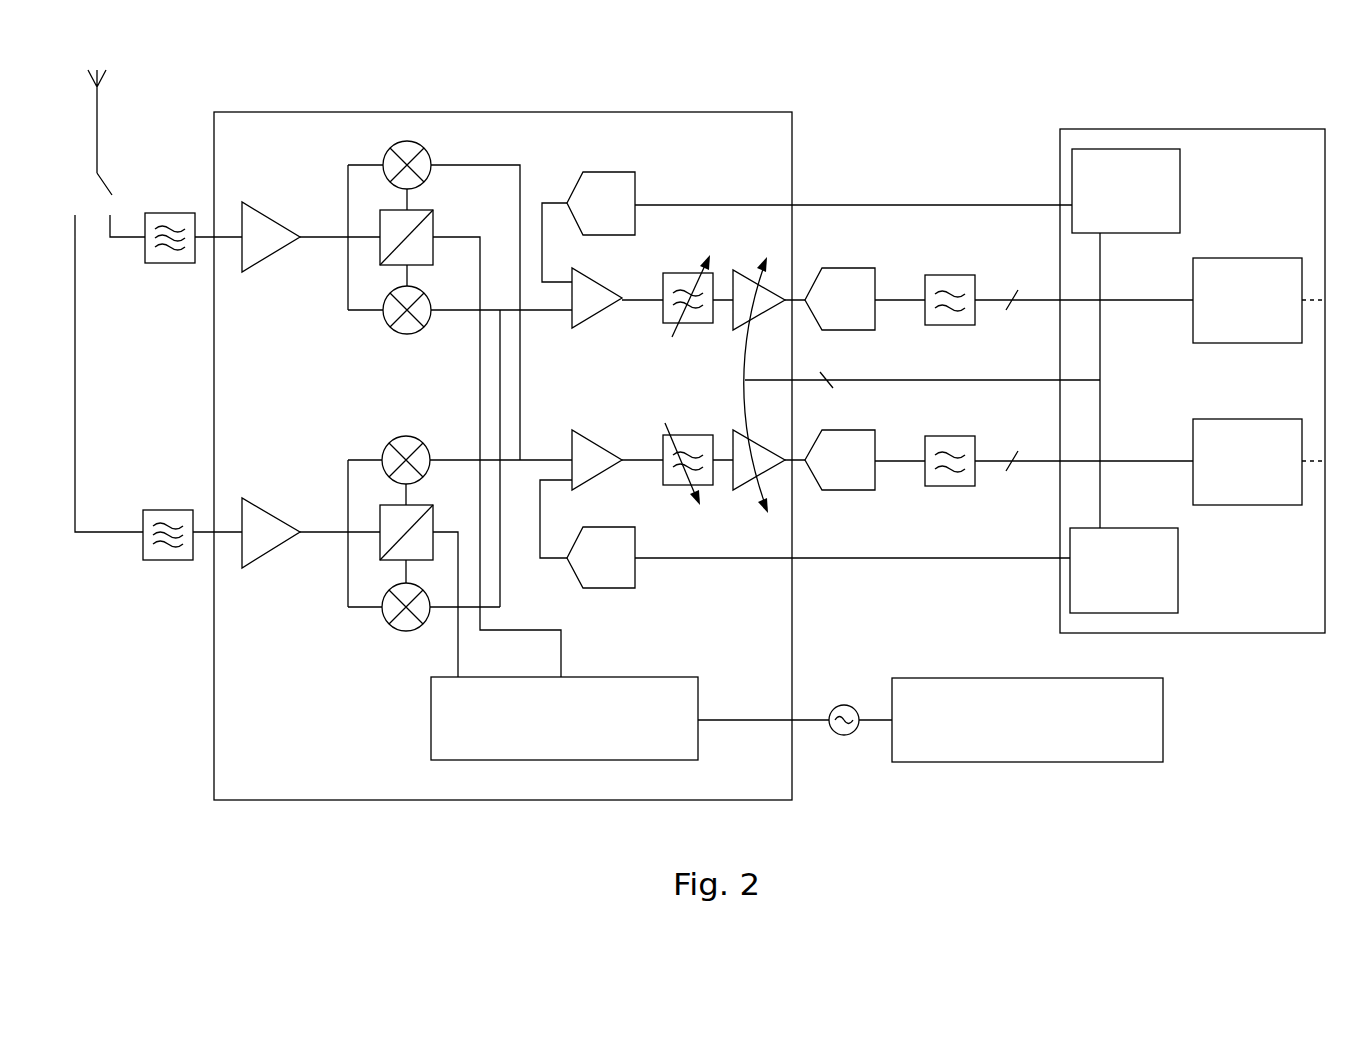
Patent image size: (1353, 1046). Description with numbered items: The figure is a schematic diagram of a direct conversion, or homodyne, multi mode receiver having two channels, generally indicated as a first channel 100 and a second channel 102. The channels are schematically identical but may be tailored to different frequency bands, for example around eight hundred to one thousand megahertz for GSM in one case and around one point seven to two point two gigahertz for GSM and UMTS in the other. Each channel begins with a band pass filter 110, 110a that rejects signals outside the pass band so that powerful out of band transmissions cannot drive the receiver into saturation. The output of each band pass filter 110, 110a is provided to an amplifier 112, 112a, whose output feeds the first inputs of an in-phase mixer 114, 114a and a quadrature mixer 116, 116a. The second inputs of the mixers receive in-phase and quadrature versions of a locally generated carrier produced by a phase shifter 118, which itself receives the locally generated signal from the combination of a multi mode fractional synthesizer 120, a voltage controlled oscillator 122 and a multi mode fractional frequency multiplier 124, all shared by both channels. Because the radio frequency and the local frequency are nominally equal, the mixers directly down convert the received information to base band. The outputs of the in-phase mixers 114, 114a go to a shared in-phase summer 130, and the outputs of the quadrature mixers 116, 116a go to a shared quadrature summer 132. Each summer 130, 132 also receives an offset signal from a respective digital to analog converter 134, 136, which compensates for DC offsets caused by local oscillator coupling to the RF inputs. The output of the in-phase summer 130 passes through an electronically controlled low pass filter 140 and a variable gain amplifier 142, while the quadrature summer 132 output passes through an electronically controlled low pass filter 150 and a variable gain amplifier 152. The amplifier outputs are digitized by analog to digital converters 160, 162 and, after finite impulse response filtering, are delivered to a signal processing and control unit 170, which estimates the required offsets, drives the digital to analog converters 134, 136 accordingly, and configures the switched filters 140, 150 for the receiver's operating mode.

The first channel 100 is at (196, 355).
The second channel 102 is at (196, 428).
The band pass filter 110 is at (172, 212).
The band pass filter 110a is at (168, 560).
The amplifier 112 is at (242, 202).
The amplifier 112a is at (242, 498).
The in-phase mixer 114 is at (407, 141).
The in-phase mixer 114a is at (406, 436).
The quadrature mixer 116 is at (388, 327).
The quadrature mixer 116a is at (397, 631).
The phase shifter 118 is at (433, 220).
The multi mode fractional synthesizer 120 is at (1028, 762).
The voltage controlled oscillator 122 is at (844, 735).
The multi mode fractional frequency multiplier 124 is at (698, 760).
The in-phase summer 130 is at (598, 442).
The quadrature summer 132 is at (572, 270).
The digital to analog converter 134 is at (603, 588).
The digital to analog converter 136 is at (612, 172).
The electronically controlled low pass filter 140 is at (670, 485).
The variable gain amplifier 142 is at (772, 470).
The electronically controlled low pass filter 150 is at (704, 251).
The variable gain amplifier 152 is at (783, 292).
The analog to digital converter 160 is at (867, 490).
The analog to digital converter 162 is at (870, 267).
The signal processing and control unit 170 is at (1218, 633).